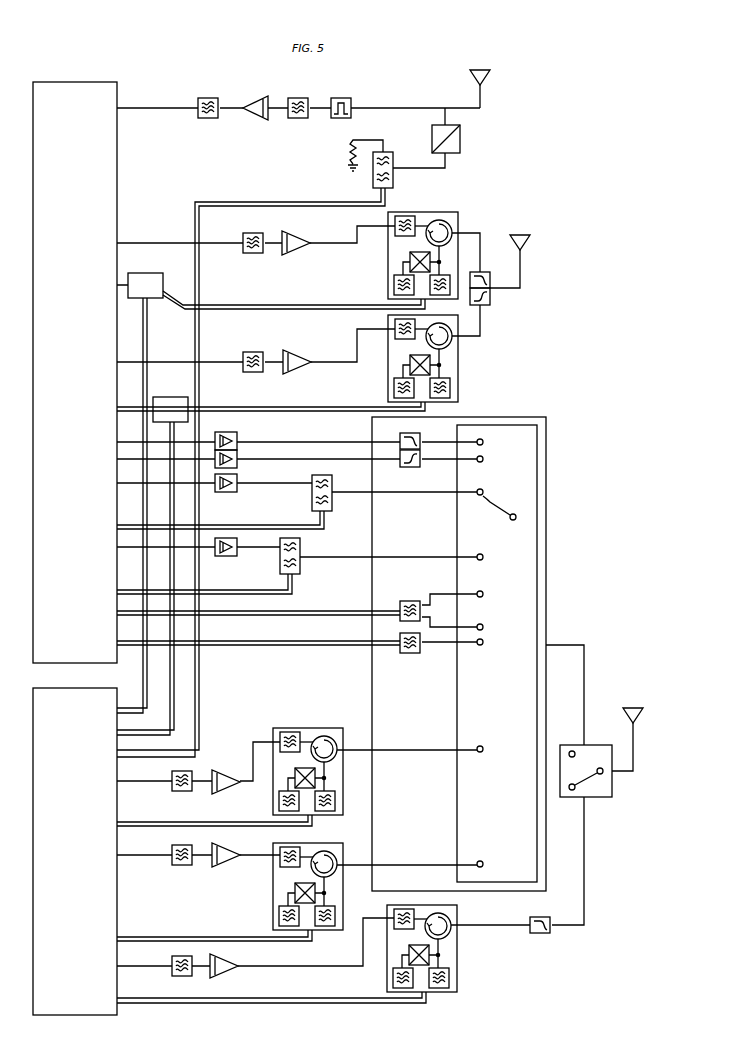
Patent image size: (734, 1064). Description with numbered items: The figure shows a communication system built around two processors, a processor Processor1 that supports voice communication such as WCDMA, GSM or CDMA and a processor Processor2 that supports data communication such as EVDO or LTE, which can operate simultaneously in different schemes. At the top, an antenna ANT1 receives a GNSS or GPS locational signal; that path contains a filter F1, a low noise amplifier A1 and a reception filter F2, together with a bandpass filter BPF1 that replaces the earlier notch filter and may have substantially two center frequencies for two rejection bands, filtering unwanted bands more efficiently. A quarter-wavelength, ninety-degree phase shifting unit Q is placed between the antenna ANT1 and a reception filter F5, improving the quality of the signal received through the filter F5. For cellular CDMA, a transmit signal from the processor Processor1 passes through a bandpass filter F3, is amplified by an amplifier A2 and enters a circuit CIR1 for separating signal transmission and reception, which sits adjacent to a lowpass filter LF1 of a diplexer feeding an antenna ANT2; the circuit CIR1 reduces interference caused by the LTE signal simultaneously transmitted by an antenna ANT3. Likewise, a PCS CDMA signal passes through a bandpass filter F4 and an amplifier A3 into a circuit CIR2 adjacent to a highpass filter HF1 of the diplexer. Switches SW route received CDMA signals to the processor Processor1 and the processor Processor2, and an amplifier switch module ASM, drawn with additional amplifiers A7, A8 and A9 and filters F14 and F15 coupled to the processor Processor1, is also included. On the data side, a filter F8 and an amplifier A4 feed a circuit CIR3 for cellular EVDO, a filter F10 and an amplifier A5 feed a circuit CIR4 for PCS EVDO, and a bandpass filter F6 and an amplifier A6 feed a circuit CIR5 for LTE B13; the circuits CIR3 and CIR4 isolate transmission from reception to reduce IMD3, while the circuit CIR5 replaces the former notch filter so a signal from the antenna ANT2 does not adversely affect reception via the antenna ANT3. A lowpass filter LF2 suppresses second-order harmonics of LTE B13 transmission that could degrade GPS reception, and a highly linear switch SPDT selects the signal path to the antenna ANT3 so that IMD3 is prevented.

The processor 1 Processor1 is at (75, 372).
The processor 2 Processor2 is at (75, 851).
The filter F1 is at (208, 117).
The low noise amplifier A1 is at (255, 116).
The reception filter F2 is at (298, 117).
The bandpass filter BPF1 is at (340, 117).
The antenna ANT1 is at (495, 89).
The ¼ wavelength phase shifting unit Q is at (434, 138).
The reception filter F5 is at (263, 448).
The bandpass filter F3 is at (253, 251).
The amplifier A2 is at (296, 250).
The circuit for separating signal transmission and reception CIR1 is at (321, 252).
The lowpass filter LF1 is at (487, 273).
The highpass filter HF1 is at (489, 304).
The antenna ANT2 is at (510, 253).
The bandpass filter F4 is at (253, 354).
The amplifier A3 is at (297, 355).
The circuit for separating signal transmission and reception CIR2 is at (302, 358).
The switch SW is at (152, 504).
The amplifier A7 is at (226, 443).
The amplifier A8 is at (226, 492).
The filter F14 is at (234, 502).
The amplifier A9 is at (226, 556).
The filter F15 is at (218, 566).
The amplifier switch module ASM is at (478, 654).
The filter F8 is at (182, 790).
The amplifier A4 is at (226, 790).
The circuit for separating signal transmission and reception CIR3 is at (297, 769).
The filter F10 is at (181, 865).
The amplifier A5 is at (226, 864).
The circuit for separating signal transmission and reception CIR4 is at (297, 884).
The bandpass filter F6 is at (182, 975).
The amplifier A6 is at (224, 974).
The circuit for separating signal transmission and reception CIR5 is at (323, 954).
The lowpass filter LF2 is at (557, 875).
The switch SPDT is at (596, 770).
The antenna ANT3 is at (626, 709).